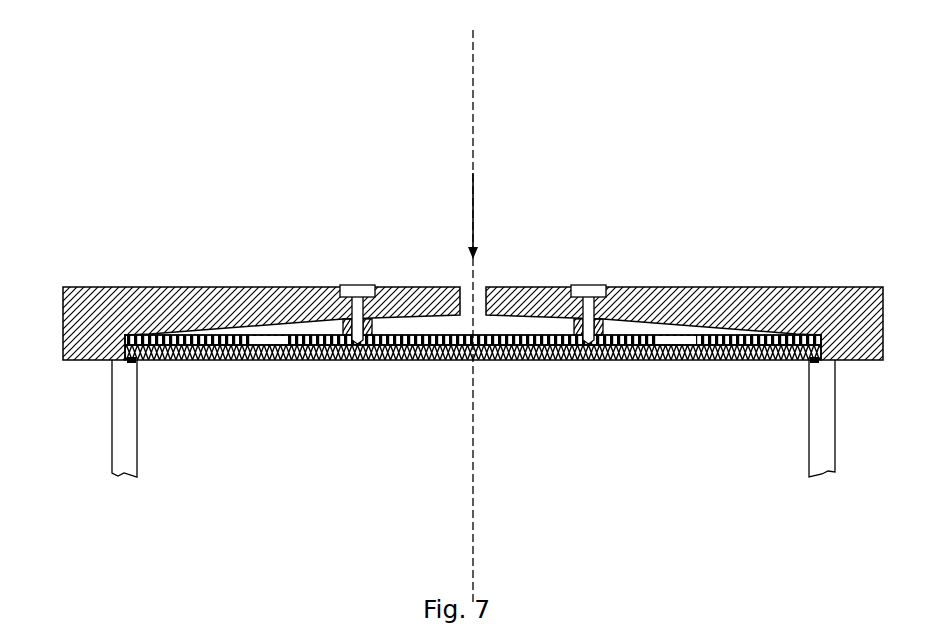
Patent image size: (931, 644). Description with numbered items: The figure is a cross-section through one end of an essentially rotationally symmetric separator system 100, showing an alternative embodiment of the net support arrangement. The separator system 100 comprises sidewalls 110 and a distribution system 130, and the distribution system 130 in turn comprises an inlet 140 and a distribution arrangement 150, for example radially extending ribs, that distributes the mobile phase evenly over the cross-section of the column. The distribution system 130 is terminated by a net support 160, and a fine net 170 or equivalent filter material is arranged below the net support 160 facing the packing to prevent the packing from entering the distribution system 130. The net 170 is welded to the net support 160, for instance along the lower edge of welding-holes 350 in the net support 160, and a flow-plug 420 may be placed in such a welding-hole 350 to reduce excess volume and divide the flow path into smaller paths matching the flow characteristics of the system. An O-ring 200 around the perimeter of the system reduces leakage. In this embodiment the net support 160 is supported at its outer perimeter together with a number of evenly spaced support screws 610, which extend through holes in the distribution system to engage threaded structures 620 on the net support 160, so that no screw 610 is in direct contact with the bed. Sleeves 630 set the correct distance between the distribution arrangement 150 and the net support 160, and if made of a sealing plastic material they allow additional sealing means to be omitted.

The separator system 100 is at (122, 84).
The sidewalls 110 is at (118, 430).
The distribution system 130 is at (243, 188).
The inlet 140 is at (495, 215).
The distribution arrangement 150 is at (614, 288).
The net support 160 is at (539, 360).
The net 170 is at (437, 360).
The O-ring 200 is at (136, 364).
The welding-hole 350 is at (682, 360).
The flow-plug 420 is at (677, 340).
The support screw 610 is at (586, 288).
The threaded structure 620 is at (584, 346).
The sleeve 630 is at (373, 328).